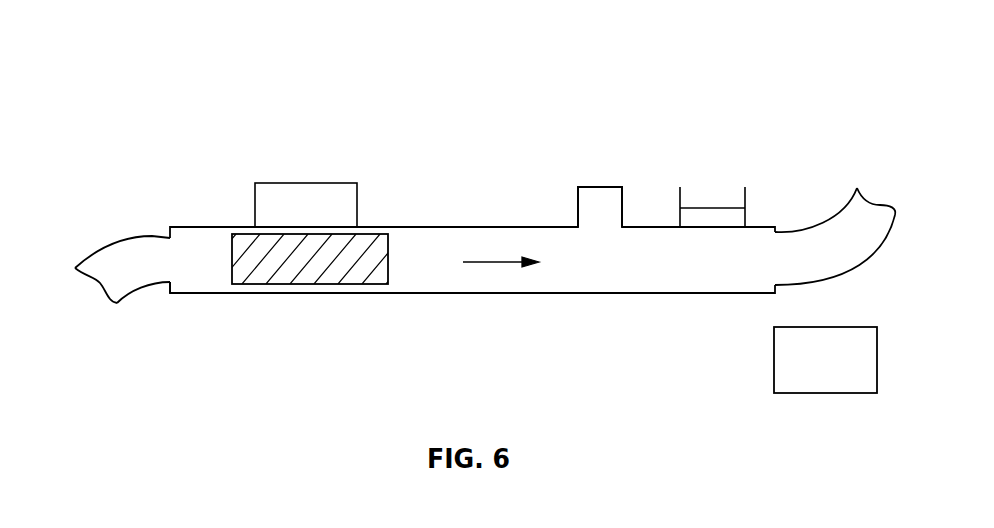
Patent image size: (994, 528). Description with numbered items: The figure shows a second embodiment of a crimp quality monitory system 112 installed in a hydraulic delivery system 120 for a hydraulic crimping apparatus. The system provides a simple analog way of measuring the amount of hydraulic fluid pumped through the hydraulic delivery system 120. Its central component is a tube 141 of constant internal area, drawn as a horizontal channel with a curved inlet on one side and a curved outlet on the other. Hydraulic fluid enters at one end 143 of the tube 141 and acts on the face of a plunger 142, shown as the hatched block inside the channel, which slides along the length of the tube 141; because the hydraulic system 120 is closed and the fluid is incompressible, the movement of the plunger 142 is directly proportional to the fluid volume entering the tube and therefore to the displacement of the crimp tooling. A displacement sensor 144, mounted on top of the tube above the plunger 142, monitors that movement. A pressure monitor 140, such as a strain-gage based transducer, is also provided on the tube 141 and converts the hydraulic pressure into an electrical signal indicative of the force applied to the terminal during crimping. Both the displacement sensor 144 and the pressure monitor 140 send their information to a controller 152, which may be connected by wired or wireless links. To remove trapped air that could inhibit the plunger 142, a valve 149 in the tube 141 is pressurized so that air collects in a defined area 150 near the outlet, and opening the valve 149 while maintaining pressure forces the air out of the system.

The crimp quality monitory system 112 is at (566, 84).
The hydraulic delivery system 120 is at (105, 250).
The pressure monitor 140 is at (606, 197).
The tube 141 is at (497, 293).
The plunger 142 is at (362, 245).
The end of the tube 143 is at (185, 282).
The displacement sensor 144 is at (282, 188).
The valve 149 is at (730, 220).
The defined area 150 is at (717, 238).
The controller 152 is at (846, 372).